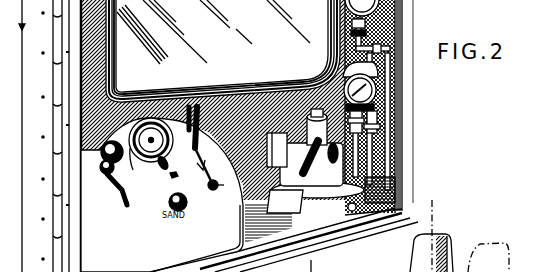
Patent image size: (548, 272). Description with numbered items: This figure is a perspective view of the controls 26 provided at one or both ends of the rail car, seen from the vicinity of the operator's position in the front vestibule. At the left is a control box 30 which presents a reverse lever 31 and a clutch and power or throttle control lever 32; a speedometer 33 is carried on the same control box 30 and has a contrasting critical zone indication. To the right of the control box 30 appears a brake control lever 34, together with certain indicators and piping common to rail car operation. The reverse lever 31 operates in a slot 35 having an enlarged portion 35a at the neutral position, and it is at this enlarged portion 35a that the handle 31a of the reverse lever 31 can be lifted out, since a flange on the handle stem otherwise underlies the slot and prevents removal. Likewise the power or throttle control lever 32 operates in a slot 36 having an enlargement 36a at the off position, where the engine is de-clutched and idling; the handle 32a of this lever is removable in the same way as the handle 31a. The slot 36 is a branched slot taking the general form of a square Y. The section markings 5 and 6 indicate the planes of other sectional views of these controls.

The controls 26 is at (413, 128).
The control box 30 is at (169, 256).
The reverse lever 31 is at (106, 176).
The handle 31a is at (133, 162).
The clutch and power or throttle control lever 32 is at (200, 107).
The handle 32a is at (190, 106).
The speedometer 33 is at (152, 118).
The brake control lever 34 is at (282, 200).
The slot 35 is at (126, 210).
The enlarged portion 35a is at (118, 196).
The slot 36 is at (206, 170).
The enlargement 36a is at (213, 191).
The section line 5 is at (432, 207).
The section line 6 is at (324, 266).